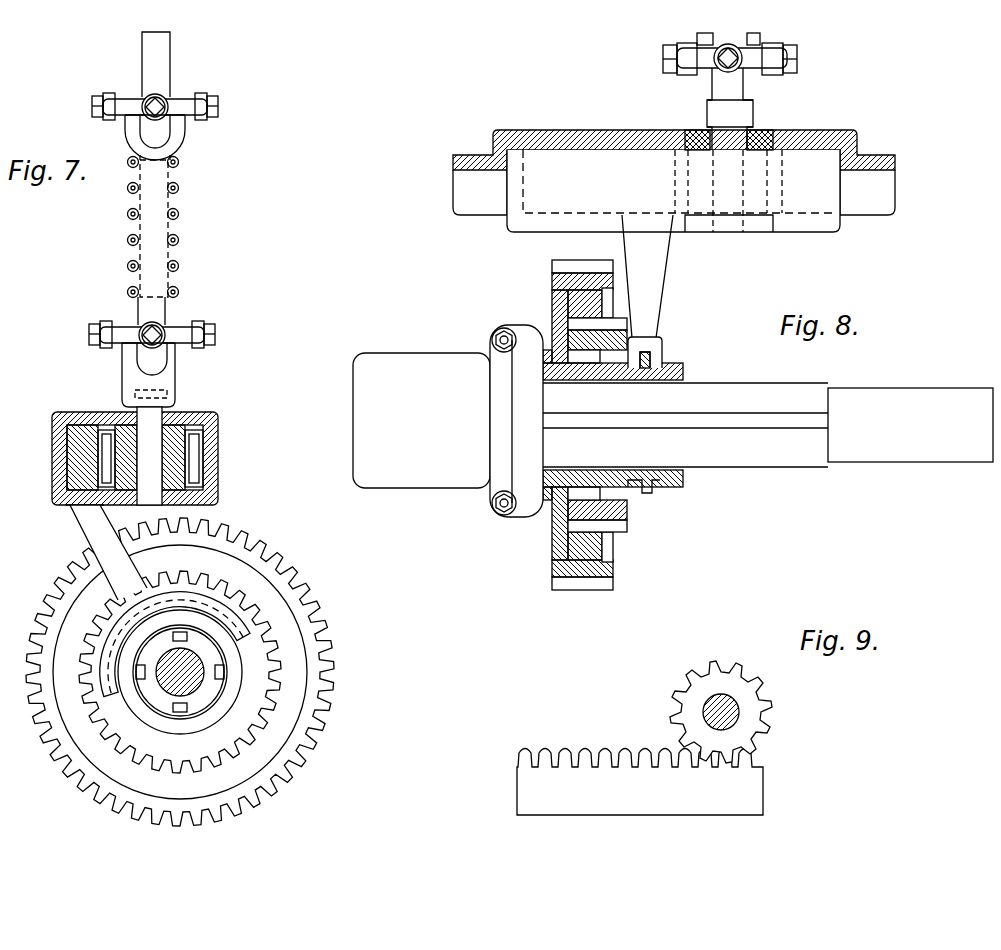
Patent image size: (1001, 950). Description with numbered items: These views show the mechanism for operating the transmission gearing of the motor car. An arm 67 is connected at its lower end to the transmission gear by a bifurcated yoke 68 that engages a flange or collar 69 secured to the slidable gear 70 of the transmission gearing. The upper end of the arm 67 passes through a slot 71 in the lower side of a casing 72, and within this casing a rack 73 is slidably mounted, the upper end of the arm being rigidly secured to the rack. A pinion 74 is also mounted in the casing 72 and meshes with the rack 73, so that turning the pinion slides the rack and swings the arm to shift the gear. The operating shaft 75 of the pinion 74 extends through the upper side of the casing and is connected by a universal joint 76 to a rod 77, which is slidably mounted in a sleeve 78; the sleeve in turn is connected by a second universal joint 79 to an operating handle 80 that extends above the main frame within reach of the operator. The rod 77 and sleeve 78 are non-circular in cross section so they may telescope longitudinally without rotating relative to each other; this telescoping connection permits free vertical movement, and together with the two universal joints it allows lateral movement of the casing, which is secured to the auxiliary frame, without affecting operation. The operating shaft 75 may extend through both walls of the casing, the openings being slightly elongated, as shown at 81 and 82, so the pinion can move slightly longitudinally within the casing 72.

In FIG. 7, the arm 67 is at (85, 537).
In FIG. 8, the arm 67 is at (655, 295).
In FIG. 7, the bifurcated yoke 68 is at (212, 605).
In FIG. 8, the bifurcated yoke 68 is at (660, 347).
In FIG. 7, the flange or collar 69 is at (218, 713).
In FIG. 8, the flange or collar 69 is at (650, 363).
In FIG. 7, the slidable gear 70 is at (250, 652).
In FIG. 8, the slidable gear 70 is at (627, 503).
In FIG. 7, the slot 71 is at (100, 500).
In FIG. 7, the casing 72 is at (57, 462).
In FIG. 7, the rack 73 is at (57, 437).
In FIG. 8, the rack 73 is at (617, 163).
In FIG. 9, the rack 73 is at (735, 797).
In FIG. 7, the pinion 74 is at (183, 470).
In FIG. 8, the pinion 74 is at (783, 172).
In FIG. 9, the pinion 74 is at (738, 675).
In FIG. 7, the operating shaft 75 is at (157, 425).
In FIG. 8, the operating shaft 75 is at (735, 147).
In FIG. 9, the operating shaft 75 is at (740, 706).
In FIG. 7, the universal joint 76 is at (185, 365).
In FIG. 8, the universal joint 76 is at (760, 42).
In FIG. 7, the rod 77 is at (163, 312).
In FIG. 7, the sleeve 78 is at (172, 203).
In FIG. 7, the second universal joint 79 is at (198, 98).
In FIG. 7, the operating handle 80 is at (150, 47).
In FIG. 8, the elongated opening 81 is at (760, 223).
In FIG. 8, the elongated opening 82 is at (748, 148).